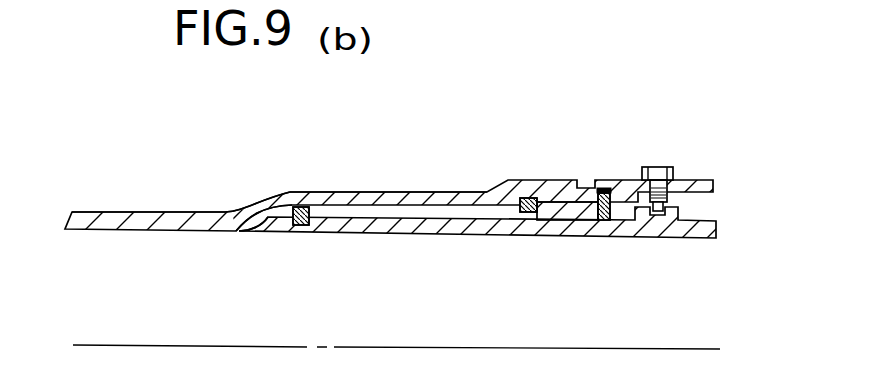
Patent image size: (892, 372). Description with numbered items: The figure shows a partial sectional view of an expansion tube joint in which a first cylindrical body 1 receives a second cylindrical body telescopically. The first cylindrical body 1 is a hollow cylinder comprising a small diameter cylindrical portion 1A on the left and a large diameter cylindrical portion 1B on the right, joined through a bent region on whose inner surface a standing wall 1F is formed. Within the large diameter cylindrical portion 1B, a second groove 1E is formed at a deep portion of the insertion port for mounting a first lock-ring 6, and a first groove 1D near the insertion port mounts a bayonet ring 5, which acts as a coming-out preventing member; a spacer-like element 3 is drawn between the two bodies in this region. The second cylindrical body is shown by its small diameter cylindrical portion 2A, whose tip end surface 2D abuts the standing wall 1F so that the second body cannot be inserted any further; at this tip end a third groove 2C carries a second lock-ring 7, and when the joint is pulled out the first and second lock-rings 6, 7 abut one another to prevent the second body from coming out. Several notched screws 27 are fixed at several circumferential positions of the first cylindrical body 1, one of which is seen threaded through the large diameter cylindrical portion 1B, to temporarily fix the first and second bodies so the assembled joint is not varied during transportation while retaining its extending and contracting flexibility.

The first cylindrical body 1 is at (202, 212).
The small diameter cylindrical portion 1A is at (123, 212).
The large diameter cylindrical portion 1B is at (423, 192).
The first groove 1D is at (610, 190).
The second groove 1E is at (528, 198).
The standing wall 1F is at (250, 218).
The small diameter cylindrical portion 2A is at (397, 229).
The third groove 2C is at (301, 228).
The tip end surface 2D is at (268, 210).
The spacer block 3 is at (558, 202).
The bayonet ring 5 is at (604, 222).
The first lock-ring 6 is at (529, 212).
The second lock-ring 7 is at (304, 207).
The notched screw 27 is at (672, 167).